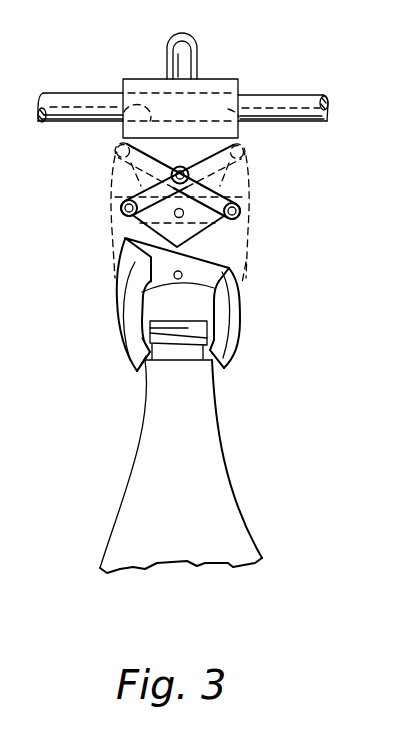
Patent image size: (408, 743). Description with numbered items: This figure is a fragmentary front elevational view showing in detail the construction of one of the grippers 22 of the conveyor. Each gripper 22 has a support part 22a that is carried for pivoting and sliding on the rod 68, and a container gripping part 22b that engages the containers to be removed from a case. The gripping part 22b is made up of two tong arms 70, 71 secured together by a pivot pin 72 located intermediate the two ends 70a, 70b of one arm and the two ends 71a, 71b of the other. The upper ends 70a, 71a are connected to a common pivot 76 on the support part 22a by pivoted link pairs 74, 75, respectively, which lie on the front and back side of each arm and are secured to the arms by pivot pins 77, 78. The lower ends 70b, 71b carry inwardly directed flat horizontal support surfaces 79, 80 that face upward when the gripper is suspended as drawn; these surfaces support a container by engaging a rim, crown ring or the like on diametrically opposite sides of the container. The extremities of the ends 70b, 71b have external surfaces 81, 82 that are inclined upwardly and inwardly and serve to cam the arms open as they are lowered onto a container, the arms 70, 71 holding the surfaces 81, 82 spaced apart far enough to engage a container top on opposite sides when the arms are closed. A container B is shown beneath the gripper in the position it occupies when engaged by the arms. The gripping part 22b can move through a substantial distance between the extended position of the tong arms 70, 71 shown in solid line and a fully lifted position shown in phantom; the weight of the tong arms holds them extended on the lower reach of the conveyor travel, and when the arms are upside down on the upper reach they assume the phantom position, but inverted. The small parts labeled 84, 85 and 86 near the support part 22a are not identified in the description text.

The gripper 22 is at (250, 42).
The support part 22a is at (160, 82).
The container gripping part 22b is at (212, 240).
The rod 68 is at (178, 83).
The tong arm 70 is at (181, 210).
The end of tong arm 70a is at (98, 217).
The end of tong arm 70b is at (104, 368).
The tong arm 71 is at (258, 318).
The end of tong arm 71a is at (261, 217).
The end of tong arm 71b is at (259, 348).
The pivot pin 72 is at (178, 301).
The pivoted link pair 74 is at (151, 180).
The pivoted link pair 75 is at (202, 181).
The common pivot 76 is at (176, 165).
The pivot pin 77 is at (265, 208).
The pivot pin 78 is at (97, 211).
The flat horizontal support surface 79 is at (103, 348).
The flat horizontal support surface 80 is at (223, 328).
The external surface 81 is at (117, 380).
The external surface 82 is at (249, 371).
The right bushing 84 is at (271, 132).
The left bushing 85 is at (107, 126).
The knob 86 is at (200, 39).
The bottle B is at (181, 458).